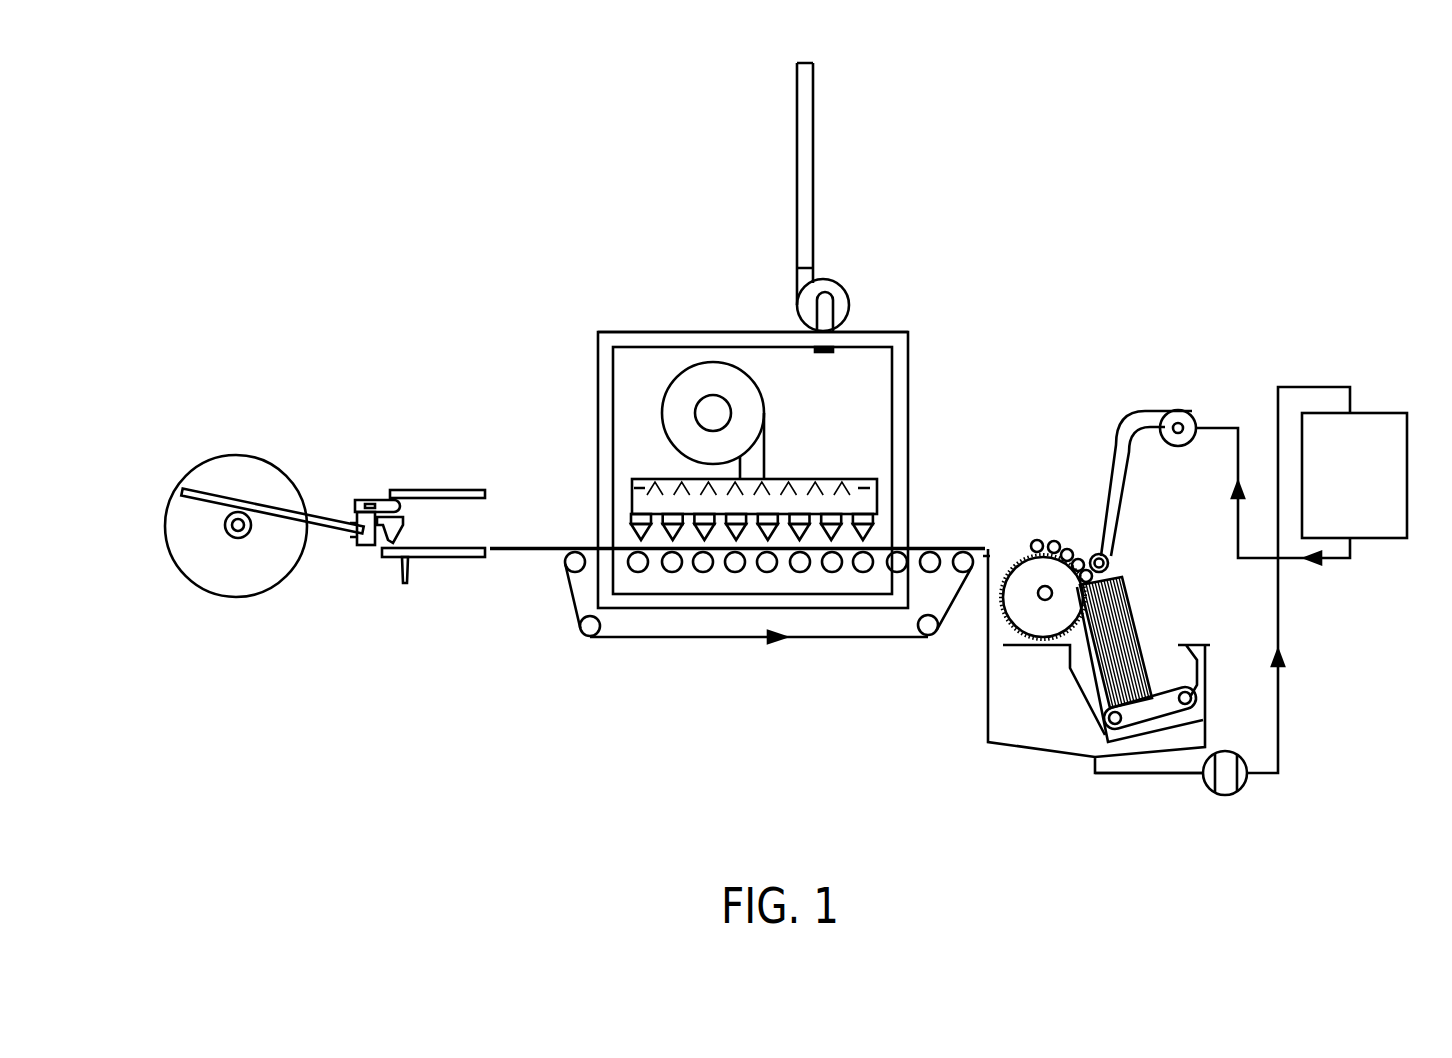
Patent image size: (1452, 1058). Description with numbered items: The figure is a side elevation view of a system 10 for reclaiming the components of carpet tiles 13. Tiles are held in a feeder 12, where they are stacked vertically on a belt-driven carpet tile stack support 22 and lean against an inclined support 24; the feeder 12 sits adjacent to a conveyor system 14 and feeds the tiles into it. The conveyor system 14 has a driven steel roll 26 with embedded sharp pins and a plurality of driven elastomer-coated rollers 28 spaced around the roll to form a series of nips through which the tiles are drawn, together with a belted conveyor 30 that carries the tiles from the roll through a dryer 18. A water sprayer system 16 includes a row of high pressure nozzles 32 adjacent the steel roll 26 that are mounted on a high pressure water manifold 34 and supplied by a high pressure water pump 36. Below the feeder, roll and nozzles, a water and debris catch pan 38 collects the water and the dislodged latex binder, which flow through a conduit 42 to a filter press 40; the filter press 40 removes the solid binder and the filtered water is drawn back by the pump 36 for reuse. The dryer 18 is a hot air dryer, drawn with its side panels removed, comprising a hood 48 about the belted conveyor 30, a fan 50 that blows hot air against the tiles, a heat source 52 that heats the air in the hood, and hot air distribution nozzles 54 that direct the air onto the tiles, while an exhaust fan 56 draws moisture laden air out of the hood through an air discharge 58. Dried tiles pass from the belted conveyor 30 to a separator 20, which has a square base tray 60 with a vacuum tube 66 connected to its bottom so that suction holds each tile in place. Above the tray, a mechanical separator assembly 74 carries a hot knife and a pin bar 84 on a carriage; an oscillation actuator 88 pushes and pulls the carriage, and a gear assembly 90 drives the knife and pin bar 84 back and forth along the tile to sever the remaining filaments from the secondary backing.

The system for reclaiming carpet tile components 10 is at (940, 257).
The feeder 12 is at (1140, 582).
The carpet tiles 13 is at (540, 548).
The conveyor system 14 is at (842, 657).
The water sprayer system 16 is at (1073, 527).
The dryer 18 is at (908, 360).
The separator 20 is at (310, 448).
The belt-driven carpet tile stack support 22 is at (1152, 716).
The inclined support 24 is at (1098, 678).
The driven steel roll 26 is at (1056, 637).
The driven elastomer-coated rollers 28 is at (1037, 542).
The belted conveyor 30 is at (685, 638).
The high pressure nozzles 32 is at (1097, 540).
The high pressure water manifold 34 is at (1107, 560).
The high pressure water pump 36 is at (1180, 410).
The water and debris catch pan 38 is at (1042, 753).
The filter press 40 is at (1354, 475).
The conduit 42 is at (1278, 700).
The hood 48 is at (660, 332).
The fan 50 is at (765, 418).
The heat source 52 is at (813, 478).
The hot air distribution nozzles 54 is at (637, 540).
The exhaust fan 56 is at (845, 295).
The air discharge 58 is at (815, 138).
The square base tray 60 is at (462, 557).
The vacuum tube 66 is at (397, 575).
The mechanical separator assembly 74 is at (360, 540).
The pin bar 84 is at (403, 523).
The oscillation actuator 88 is at (247, 455).
The gear assembly 90 is at (390, 492).